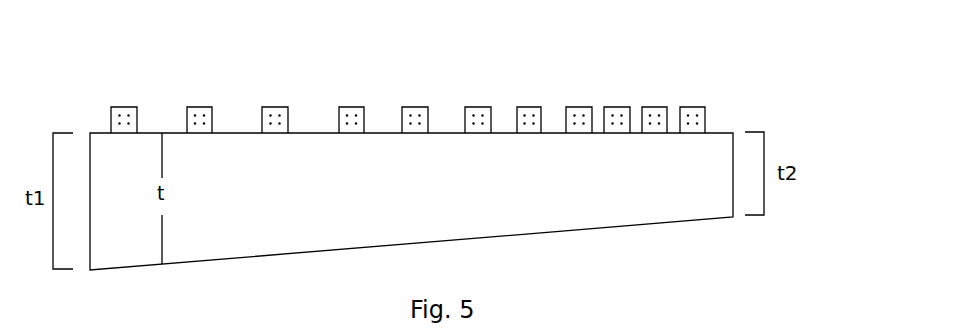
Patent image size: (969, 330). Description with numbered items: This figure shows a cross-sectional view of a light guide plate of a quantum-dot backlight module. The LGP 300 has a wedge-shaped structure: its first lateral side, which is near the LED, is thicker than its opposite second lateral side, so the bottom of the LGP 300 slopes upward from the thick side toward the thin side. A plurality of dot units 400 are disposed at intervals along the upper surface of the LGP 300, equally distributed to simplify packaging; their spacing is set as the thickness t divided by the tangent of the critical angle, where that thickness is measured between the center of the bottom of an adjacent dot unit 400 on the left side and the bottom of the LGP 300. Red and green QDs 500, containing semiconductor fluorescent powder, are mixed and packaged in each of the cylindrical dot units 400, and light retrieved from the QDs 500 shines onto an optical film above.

The LGP 300 is at (735, 134).
The dot units 400 is at (706, 121).
The QDs 500 is at (657, 120).